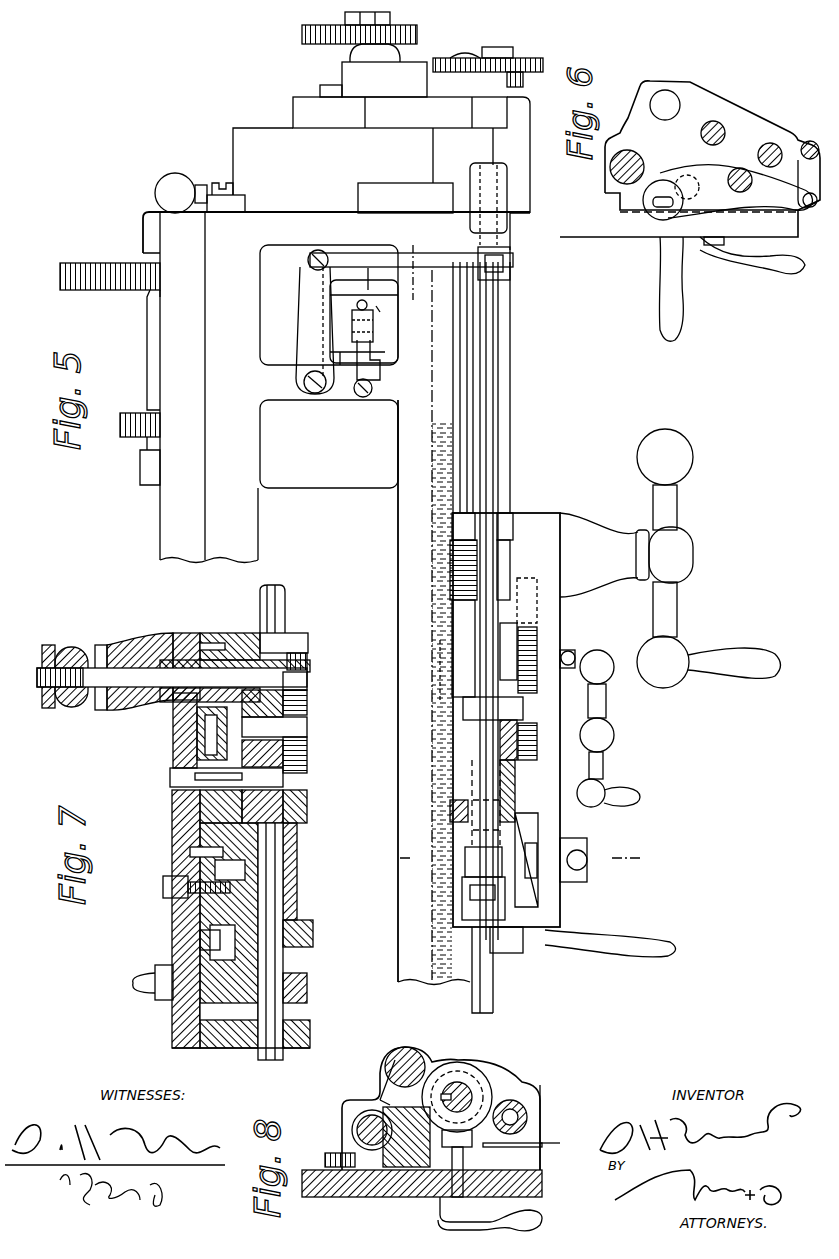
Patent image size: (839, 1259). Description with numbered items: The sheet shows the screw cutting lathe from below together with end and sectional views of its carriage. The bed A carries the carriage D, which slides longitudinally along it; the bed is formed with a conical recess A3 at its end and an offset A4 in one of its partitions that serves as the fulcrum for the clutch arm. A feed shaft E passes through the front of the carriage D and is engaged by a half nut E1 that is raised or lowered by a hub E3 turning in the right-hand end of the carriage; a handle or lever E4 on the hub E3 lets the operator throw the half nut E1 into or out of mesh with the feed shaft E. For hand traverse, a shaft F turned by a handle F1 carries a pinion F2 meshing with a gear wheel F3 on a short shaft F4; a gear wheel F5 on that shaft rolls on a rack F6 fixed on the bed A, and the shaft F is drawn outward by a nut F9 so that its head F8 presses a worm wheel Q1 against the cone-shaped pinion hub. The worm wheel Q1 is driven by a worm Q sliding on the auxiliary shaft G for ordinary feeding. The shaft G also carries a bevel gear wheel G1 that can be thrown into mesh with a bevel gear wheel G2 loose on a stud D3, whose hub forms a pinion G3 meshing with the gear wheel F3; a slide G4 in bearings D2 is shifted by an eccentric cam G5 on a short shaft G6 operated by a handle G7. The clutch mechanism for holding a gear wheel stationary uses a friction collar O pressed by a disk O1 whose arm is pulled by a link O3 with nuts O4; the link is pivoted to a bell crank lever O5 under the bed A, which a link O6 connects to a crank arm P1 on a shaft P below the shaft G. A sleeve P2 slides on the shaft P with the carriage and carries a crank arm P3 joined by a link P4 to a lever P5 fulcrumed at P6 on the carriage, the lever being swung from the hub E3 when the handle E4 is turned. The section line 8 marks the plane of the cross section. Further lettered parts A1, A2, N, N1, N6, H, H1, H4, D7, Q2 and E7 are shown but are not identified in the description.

In FIG. 5, the bed A is at (389, 528).
In FIG. 5, the upper frame extension A1 is at (236, 130).
In FIG. 5, the frame side plate A2 is at (532, 150).
In FIG. 5, the conical recess A3 is at (338, 252).
In FIG. 5, the offset A4 is at (342, 358).
In FIG. 5, the gear wheel N is at (348, 20).
In FIG. 5, the gear shaft nut N1 is at (400, 20).
In FIG. 5, the small pinion N6 is at (525, 82).
In FIG. 5, the gear shaft H is at (536, 60).
In FIG. 5, the gear wheel H1 is at (466, 58).
In FIG. 5, the rod H4 is at (368, 268).
In FIG. 5, the friction collar O is at (398, 315).
In FIG. 5, the disk O1 is at (377, 314).
In FIG. 5, the link O3 is at (380, 372).
In FIG. 5, the nuts O4 is at (354, 321).
In FIG. 5, the bell crank lever O5 is at (305, 290).
In FIG. 5, the link O6 is at (418, 256).
In FIG. 5, the shaft P is at (500, 340).
In FIG. 6, the shaft P is at (772, 143).
In FIG. 8, the shaft P is at (530, 1110).
In FIG. 5, the crank arm P1 is at (512, 262).
In FIG. 5, the sleeve P2 is at (483, 840).
In FIG. 8, the sleeve P2 is at (512, 1100).
In FIG. 6, the crank arm P3 is at (810, 141).
In FIG. 6, the link P4 is at (820, 172).
In FIG. 6, the lever P5 is at (663, 205).
In FIG. 6, the fulcrum P6 is at (740, 168).
In FIG. 5, the carriage D is at (551, 513).
In FIG. 6, the carriage D is at (594, 240).
In FIG. 7, the carriage D is at (172, 812).
In FIG. 8, the carriage D is at (345, 1198).
In FIG. 6, the bearings D2 is at (667, 92).
In FIG. 8, the bearings D2 is at (398, 1050).
In FIG. 7, the stud D3 is at (285, 862).
In FIG. 7, the carriage bottom D7 is at (212, 1050).
In FIG. 5, the worm Q is at (450, 572).
In FIG. 7, the worm Q is at (306, 705).
In FIG. 7, the worm wheel Q1 is at (293, 645).
In FIG. 7, the shaft end Q2 is at (285, 600).
In FIG. 5, the shaft F is at (570, 660).
In FIG. 7, the shaft F is at (134, 668).
In FIG. 5, the handle F1 is at (680, 572).
In FIG. 7, the pinion F2 is at (212, 643).
In FIG. 5, the gear wheel F3 is at (537, 652).
In FIG. 7, the gear wheel F3 is at (195, 740).
In FIG. 8, the gear wheel F3 is at (335, 1152).
In FIG. 7, the short shaft F4 is at (170, 782).
In FIG. 5, the gear wheel F5 is at (433, 667).
In FIG. 7, the gear wheel F5 is at (308, 745).
In FIG. 5, the rack F6 is at (434, 512).
In FIG. 7, the head F8 is at (306, 680).
In FIG. 7, the nut F9 is at (46, 650).
In FIG. 7, the auxiliary shaft G is at (286, 1052).
In FIG. 8, the auxiliary shaft G is at (462, 1085).
In FIG. 5, the bevel gear wheel G1 is at (442, 797).
In FIG. 6, the bevel gear wheel G1 is at (718, 122).
In FIG. 7, the bevel gear wheel G1 is at (310, 930).
In FIG. 5, the bevel gear wheel G2 is at (515, 812).
In FIG. 8, the bevel gear wheel G2 is at (500, 1148).
In FIG. 5, the pinion G3 is at (538, 750).
In FIG. 7, the pinion G3 is at (190, 852).
In FIG. 7, the slide G4 is at (308, 990).
In FIG. 8, the slide G4 is at (405, 1047).
In FIG. 7, the eccentric cam G5 is at (172, 995).
In FIG. 8, the eccentric cam G5 is at (550, 1133).
In FIG. 6, the short shaft G6 is at (712, 248).
In FIG. 7, the short shaft G6 is at (200, 940).
In FIG. 8, the short shaft G6 is at (457, 1200).
In FIG. 5, the handle G7 is at (583, 864).
In FIG. 6, the feed shaft E is at (612, 163).
In FIG. 8, the feed shaft E is at (355, 1112).
In FIG. 5, the half nut E1 is at (535, 830).
In FIG. 6, the half nut E1 is at (683, 180).
In FIG. 7, the half nut E1 is at (195, 915).
In FIG. 8, the half nut E1 is at (372, 1098).
In FIG. 6, the hub E3 is at (660, 180).
In FIG. 5, the handle E4 is at (612, 943).
In FIG. 6, the handle E4 is at (662, 255).
In FIG. 6, the lever E7 is at (770, 262).
In FIG. 5, the section line 8— 8 is at (504, 858).